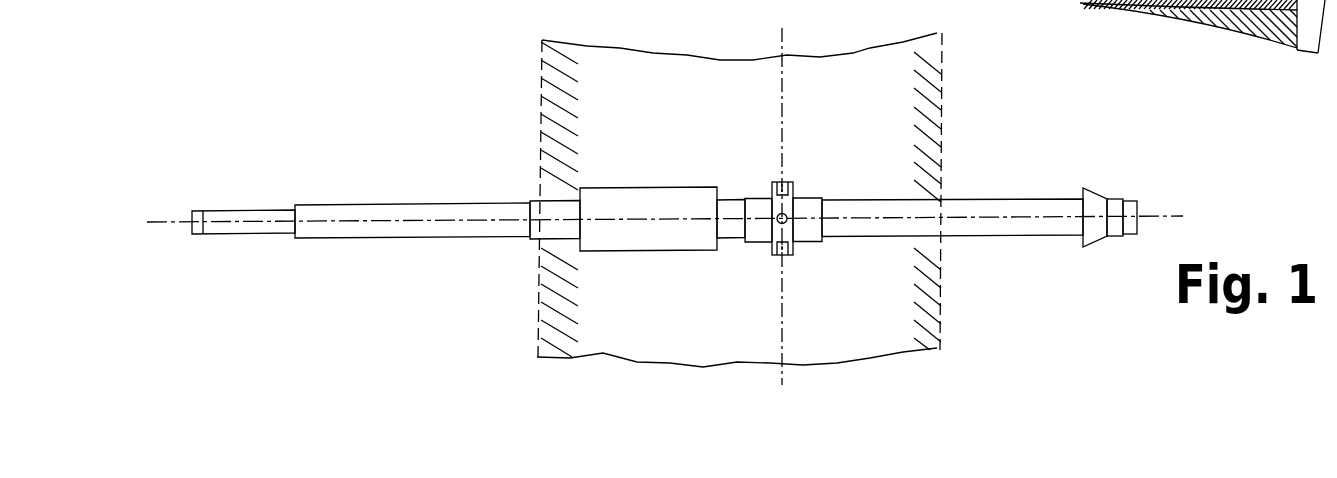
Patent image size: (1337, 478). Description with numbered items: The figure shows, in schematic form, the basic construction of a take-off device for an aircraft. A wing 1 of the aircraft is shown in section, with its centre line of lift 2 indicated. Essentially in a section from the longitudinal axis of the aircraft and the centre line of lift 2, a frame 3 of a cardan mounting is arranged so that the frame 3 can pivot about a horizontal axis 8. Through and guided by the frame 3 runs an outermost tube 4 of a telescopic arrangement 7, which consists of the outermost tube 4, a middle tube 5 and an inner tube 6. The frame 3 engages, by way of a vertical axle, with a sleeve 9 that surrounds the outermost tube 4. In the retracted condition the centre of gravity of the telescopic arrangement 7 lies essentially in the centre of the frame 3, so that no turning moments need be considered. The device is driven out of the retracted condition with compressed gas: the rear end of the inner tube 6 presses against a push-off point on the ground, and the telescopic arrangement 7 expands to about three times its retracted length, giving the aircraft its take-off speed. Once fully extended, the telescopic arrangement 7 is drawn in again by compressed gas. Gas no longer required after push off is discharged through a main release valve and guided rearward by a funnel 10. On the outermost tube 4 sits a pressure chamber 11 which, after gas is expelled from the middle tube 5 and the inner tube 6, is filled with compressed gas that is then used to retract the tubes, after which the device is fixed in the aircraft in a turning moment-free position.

The wing 1 is at (942, 110).
The centre line of lift 2 is at (788, 123).
The frame 3 is at (753, 182).
The outermost tube 4 is at (993, 210).
The middle tube 5 is at (372, 213).
The inner tube 6 is at (240, 215).
The telescopic arrangement 7 is at (698, 112).
The horizontal axis 8 is at (772, 183).
The sleeve 9 is at (812, 205).
The funnel 10 is at (1097, 193).
The pressure chamber 11 is at (677, 198).